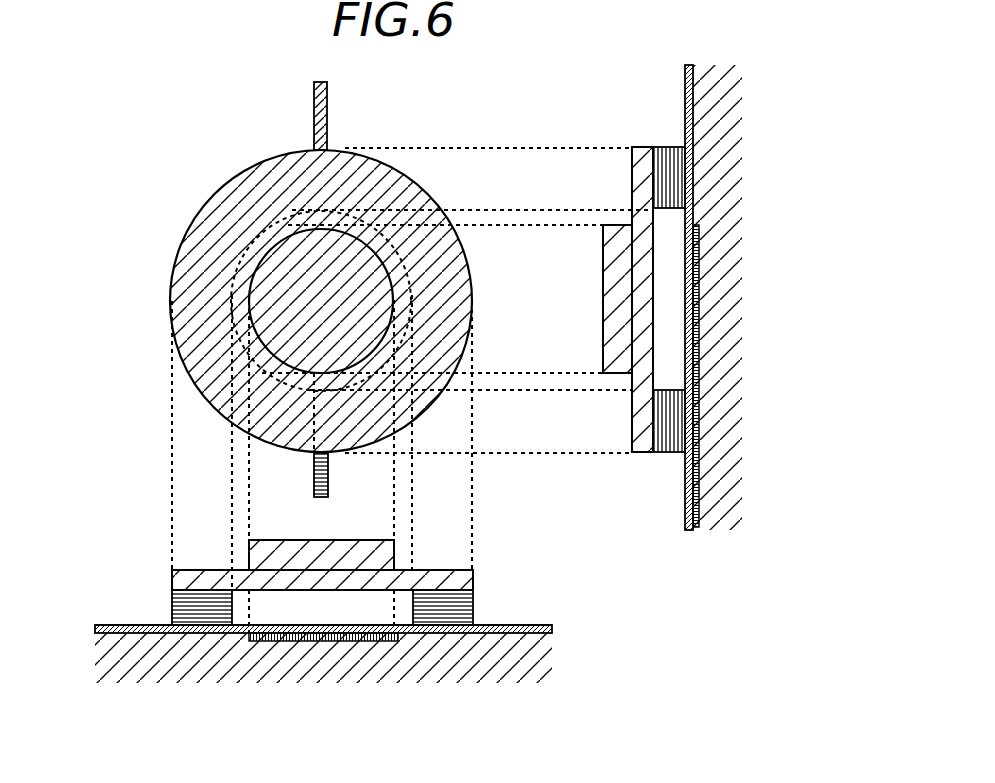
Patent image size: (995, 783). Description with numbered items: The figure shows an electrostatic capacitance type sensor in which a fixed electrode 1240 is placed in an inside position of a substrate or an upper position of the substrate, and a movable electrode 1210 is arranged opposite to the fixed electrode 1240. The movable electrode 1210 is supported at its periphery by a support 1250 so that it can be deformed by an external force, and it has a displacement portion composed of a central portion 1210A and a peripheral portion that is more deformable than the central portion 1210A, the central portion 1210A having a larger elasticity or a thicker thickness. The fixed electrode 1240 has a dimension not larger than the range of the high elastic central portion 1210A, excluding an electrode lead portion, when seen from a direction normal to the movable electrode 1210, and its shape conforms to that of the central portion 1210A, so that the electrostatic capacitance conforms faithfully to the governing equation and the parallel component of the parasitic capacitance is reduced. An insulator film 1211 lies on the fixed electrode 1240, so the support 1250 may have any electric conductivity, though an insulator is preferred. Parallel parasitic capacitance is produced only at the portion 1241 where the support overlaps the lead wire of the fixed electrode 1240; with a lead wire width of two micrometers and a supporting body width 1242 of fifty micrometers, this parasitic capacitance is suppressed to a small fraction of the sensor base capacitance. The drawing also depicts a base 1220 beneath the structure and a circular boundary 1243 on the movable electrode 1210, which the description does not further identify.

The movable electrode 1210 is at (293, 214).
The central portion 1210A is at (280, 307).
The insulator film 1211 is at (552, 628).
The base 1220 is at (290, 610).
The fixed electrode 1240 is at (700, 311).
The lead wire 1241 is at (383, 480).
The width of the supporting body 1242 is at (538, 390).
The circular boundary 1243 is at (313, 418).
The support 1250 is at (700, 424).